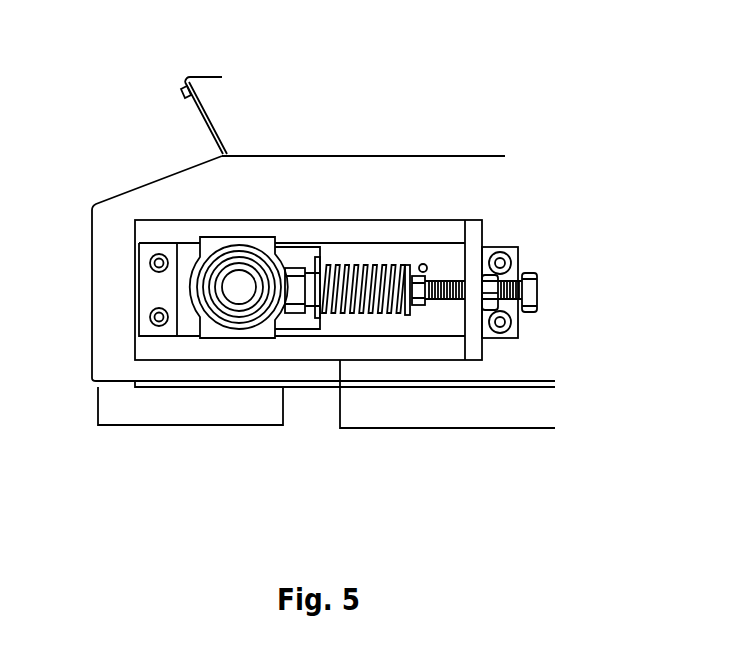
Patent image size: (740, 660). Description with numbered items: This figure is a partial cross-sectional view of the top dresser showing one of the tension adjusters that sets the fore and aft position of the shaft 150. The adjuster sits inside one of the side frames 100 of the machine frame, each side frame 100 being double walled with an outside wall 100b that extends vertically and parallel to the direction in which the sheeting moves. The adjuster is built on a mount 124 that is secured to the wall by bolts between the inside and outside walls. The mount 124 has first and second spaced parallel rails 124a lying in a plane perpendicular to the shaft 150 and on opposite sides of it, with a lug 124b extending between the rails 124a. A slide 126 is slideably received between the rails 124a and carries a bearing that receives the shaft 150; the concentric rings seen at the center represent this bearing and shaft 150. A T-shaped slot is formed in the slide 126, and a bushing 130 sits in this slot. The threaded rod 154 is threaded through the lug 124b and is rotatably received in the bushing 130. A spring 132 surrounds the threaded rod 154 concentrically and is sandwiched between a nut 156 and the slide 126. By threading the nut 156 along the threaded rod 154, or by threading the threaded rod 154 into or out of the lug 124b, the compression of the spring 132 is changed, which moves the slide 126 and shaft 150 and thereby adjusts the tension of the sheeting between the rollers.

The side frame 100 is at (348, 156).
The outside wall 100b is at (445, 190).
The mount 124 is at (162, 218).
The rails 124a is at (217, 230).
The lug 124b is at (472, 348).
The slide 126 is at (197, 292).
The bushing 130 is at (295, 282).
The spring 132 is at (355, 308).
The shaft 150 is at (239, 287).
The threaded rod 154 is at (515, 285).
The nut 156 is at (415, 312).